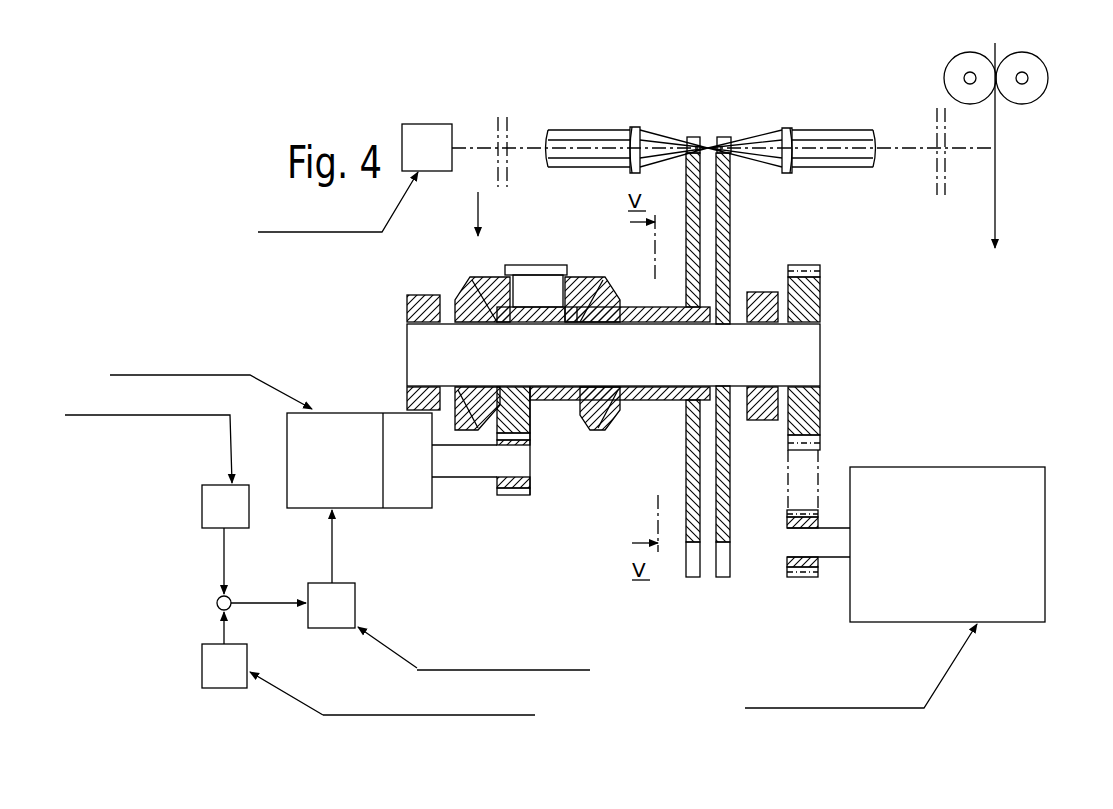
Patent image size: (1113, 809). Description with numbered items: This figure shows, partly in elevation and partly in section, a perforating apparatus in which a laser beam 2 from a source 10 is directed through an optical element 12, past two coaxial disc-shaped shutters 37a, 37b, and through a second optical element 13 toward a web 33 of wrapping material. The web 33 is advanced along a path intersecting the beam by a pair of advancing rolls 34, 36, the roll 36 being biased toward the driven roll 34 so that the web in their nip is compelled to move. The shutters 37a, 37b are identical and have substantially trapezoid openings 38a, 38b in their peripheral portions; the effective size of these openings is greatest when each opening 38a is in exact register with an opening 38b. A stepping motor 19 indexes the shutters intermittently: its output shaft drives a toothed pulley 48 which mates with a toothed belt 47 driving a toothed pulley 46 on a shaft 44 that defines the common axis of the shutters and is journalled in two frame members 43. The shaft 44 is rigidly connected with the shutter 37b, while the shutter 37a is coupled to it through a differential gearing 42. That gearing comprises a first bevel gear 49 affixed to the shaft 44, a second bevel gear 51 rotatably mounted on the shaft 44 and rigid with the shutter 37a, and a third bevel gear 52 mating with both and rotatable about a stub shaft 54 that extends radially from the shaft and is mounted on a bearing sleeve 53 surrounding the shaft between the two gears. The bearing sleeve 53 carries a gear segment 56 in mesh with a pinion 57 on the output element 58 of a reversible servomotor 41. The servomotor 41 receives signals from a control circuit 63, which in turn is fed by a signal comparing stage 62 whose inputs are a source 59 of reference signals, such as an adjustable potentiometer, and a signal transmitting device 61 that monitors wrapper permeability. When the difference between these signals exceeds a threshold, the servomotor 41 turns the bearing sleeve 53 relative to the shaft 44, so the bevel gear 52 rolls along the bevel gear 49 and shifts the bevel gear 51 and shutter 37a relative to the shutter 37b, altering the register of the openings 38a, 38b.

The laser beam 2 is at (708, 145).
The source 10 is at (430, 130).
The optical element 12 is at (635, 128).
The optical element 13 is at (790, 130).
The stepping motor 19 is at (962, 557).
The web of wrapping material 33 is at (998, 208).
The advancing roll 34 is at (948, 70).
The advancing roll 36 is at (1042, 72).
The disc-shaped shutter 37a is at (690, 455).
The disc-shaped shutter 37b is at (720, 465).
The opening 38a is at (693, 137).
The opening 38b is at (725, 137).
The servomotor 41 is at (336, 398).
The differential gearing 42 is at (477, 202).
The frame member 43 is at (412, 300).
The shaft 44 is at (812, 340).
The toothed pulley 46 is at (813, 297).
The toothed belt 47 is at (820, 455).
The toothed pulley 48 is at (790, 563).
The first bevel gear 49 is at (457, 298).
The second bevel gear 51 is at (610, 305).
The third bevel gear 52 is at (582, 280).
The bearing sleeve 53 is at (548, 400).
The stub shaft 54 is at (533, 282).
The gear segment 56 is at (527, 432).
The pinion 57 is at (522, 490).
The output element 58 is at (462, 470).
The source of reference signals 59 is at (215, 490).
The signal transmitting device 61 is at (222, 682).
The signal comparing stage 62 is at (215, 603).
The control circuit 63 is at (347, 604).